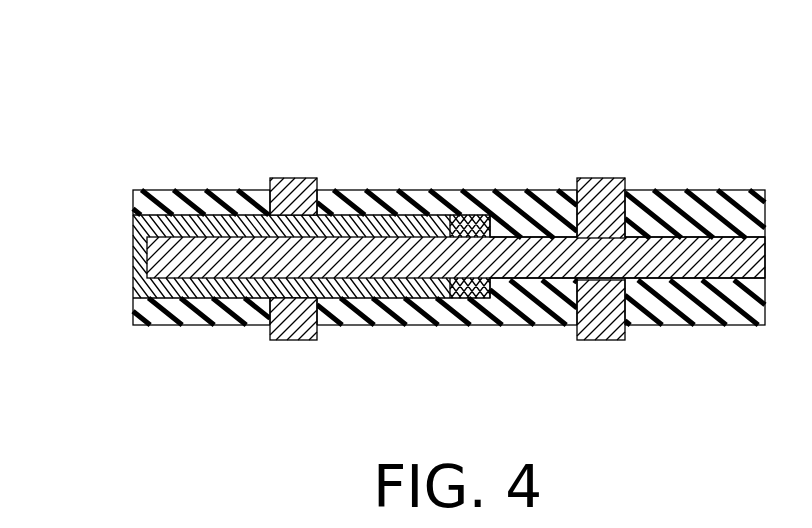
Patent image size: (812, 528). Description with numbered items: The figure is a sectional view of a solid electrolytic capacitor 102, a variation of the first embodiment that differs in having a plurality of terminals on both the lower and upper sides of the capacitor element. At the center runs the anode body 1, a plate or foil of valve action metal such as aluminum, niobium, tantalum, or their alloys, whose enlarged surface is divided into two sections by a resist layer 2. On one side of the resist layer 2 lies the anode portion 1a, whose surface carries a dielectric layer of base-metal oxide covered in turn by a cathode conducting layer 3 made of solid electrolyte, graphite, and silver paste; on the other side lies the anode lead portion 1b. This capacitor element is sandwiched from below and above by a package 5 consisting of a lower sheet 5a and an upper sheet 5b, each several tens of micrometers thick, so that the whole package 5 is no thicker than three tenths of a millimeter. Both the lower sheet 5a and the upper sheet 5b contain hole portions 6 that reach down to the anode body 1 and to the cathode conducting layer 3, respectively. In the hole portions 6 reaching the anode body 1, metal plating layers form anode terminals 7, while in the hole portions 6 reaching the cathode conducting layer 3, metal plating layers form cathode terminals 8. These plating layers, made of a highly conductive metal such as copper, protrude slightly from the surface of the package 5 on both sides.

The solid electrolytic capacitor 102 is at (647, 146).
The anode body 1 is at (433, 245).
The anode portion 1a is at (312, 242).
The anode lead portion 1b is at (688, 258).
The resist layer 2 is at (491, 285).
The cathode conducting layer 3 is at (171, 193).
The package 5 is at (70, 188).
The lower sheet 5a is at (134, 308).
The upper sheet 5b is at (134, 207).
The hole portions 6 is at (256, 194).
The anode terminals 7 is at (591, 193).
The cathode terminals 8 is at (288, 178).